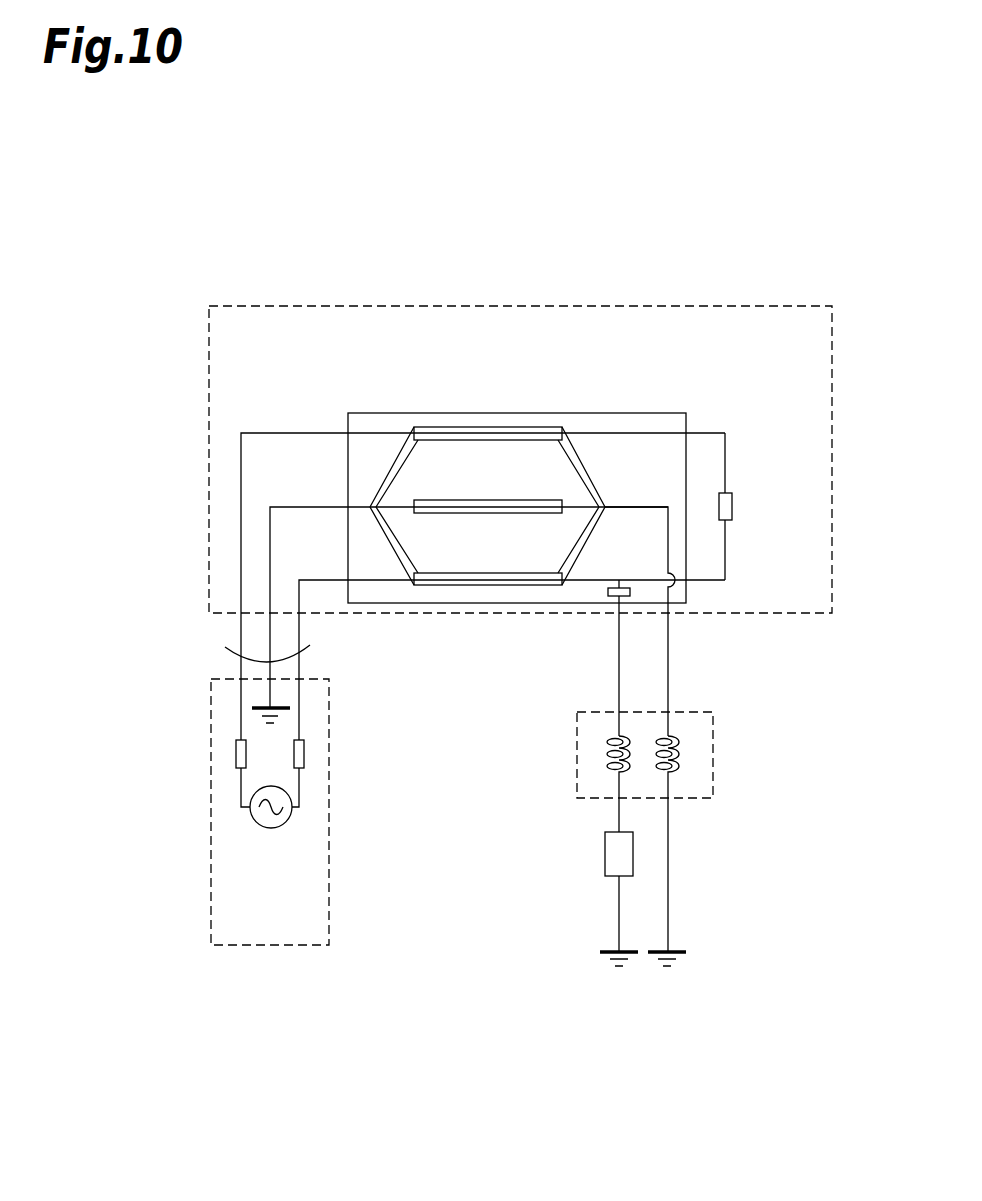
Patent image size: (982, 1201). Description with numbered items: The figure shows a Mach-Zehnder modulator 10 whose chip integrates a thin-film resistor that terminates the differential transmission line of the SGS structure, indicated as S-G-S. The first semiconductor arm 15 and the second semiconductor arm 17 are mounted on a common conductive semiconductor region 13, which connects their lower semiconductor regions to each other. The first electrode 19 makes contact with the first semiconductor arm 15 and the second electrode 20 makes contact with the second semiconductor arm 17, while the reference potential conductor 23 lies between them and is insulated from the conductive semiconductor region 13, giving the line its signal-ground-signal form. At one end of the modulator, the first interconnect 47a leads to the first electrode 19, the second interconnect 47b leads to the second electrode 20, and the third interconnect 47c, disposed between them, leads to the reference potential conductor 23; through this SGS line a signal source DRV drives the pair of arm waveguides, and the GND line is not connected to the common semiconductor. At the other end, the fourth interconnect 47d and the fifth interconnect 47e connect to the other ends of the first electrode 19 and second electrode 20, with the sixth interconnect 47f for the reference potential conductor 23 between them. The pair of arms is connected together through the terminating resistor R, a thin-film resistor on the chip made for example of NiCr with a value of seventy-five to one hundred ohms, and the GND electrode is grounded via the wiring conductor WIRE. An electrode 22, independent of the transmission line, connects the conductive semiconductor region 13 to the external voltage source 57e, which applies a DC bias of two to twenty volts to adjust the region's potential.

The Mach-Zehnder modulator 10 is at (772, 306).
The conductive semiconductor region 13 is at (396, 413).
The first semiconductor arm 15 is at (400, 465).
The second semiconductor arm 17 is at (400, 545).
The first electrode 19 is at (510, 427).
The second electrode 20 is at (510, 573).
The electrode 22 is at (606, 600).
The reference potential conductor 23 is at (510, 500).
The first interconnect 47a is at (290, 433).
The second interconnect 47b is at (325, 580).
The third interconnect 47c is at (310, 507).
The fourth interconnect 47d is at (712, 433).
The fifth interconnect 47e is at (598, 580).
The sixth interconnect 47f is at (627, 507).
The external voltage source BIAS 57e is at (605, 860).
The terminating resistor R is at (733, 506).
The wiring conductor WIRE is at (715, 780).
The signal source DRV is at (211, 875).
The SGS structure S-G-S is at (315, 648).